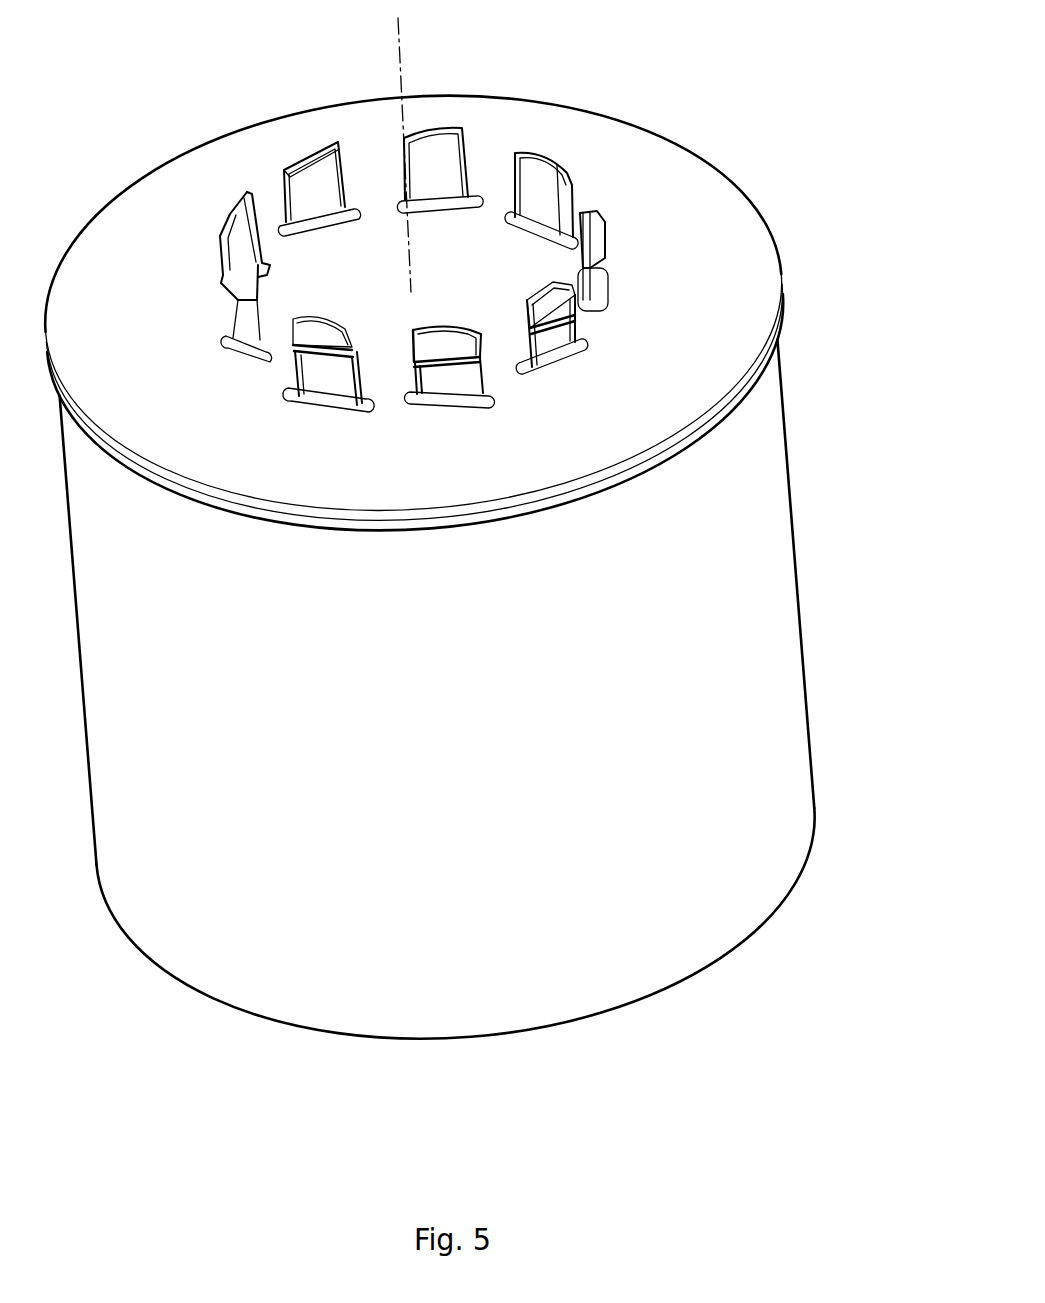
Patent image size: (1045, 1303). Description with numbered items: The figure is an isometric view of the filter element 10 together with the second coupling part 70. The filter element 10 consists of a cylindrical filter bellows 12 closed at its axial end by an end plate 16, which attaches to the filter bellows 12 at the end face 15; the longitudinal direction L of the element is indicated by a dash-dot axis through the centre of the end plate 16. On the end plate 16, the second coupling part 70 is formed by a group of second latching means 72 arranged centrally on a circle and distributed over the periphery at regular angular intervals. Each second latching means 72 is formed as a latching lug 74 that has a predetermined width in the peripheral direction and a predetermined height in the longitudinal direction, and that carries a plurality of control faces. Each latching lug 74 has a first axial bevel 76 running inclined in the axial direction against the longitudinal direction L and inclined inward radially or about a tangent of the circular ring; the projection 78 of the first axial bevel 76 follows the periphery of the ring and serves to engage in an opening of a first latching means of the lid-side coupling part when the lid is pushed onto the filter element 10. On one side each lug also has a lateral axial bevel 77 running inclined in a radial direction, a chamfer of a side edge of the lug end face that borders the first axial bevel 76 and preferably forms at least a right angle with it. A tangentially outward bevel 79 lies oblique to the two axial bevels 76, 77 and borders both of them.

The filter element 10 is at (481, 567).
The filter bellows 12 is at (445, 702).
The end face 15 is at (413, 303).
The end plate 16 is at (414, 313).
The second coupling part 70 is at (456, 264).
The second latching means 72 is at (590, 302).
The latching lug 74 is at (545, 298).
The first axial bevel 76 is at (339, 357).
The lateral axial bevel 77 is at (347, 337).
The projection 78 is at (300, 352).
The tangentially outward bevel 79 is at (345, 375).
The longitudinal direction L is at (406, 32).